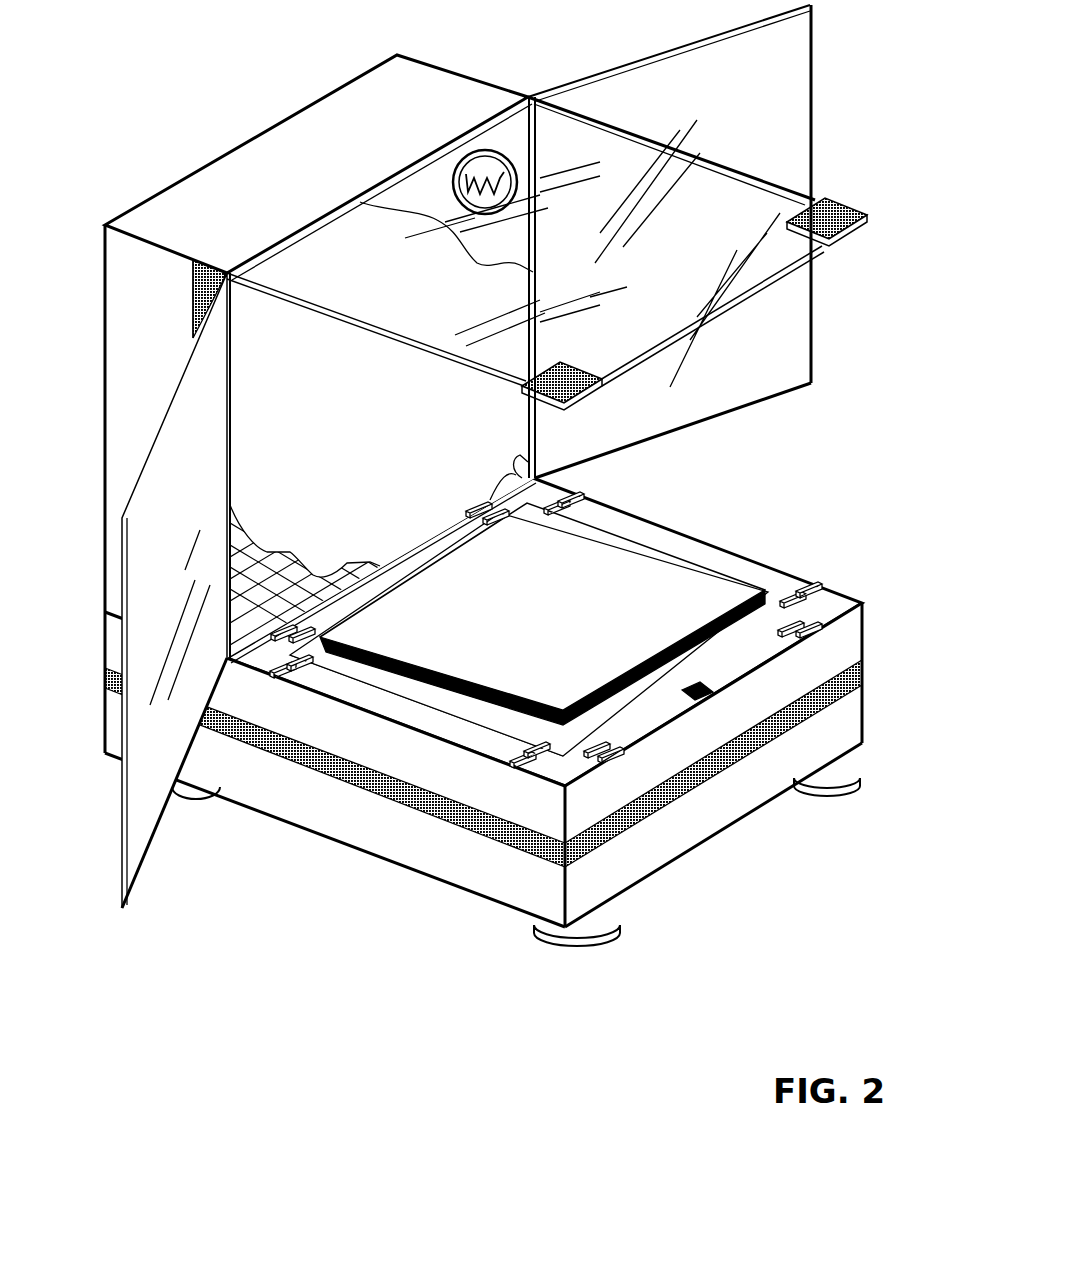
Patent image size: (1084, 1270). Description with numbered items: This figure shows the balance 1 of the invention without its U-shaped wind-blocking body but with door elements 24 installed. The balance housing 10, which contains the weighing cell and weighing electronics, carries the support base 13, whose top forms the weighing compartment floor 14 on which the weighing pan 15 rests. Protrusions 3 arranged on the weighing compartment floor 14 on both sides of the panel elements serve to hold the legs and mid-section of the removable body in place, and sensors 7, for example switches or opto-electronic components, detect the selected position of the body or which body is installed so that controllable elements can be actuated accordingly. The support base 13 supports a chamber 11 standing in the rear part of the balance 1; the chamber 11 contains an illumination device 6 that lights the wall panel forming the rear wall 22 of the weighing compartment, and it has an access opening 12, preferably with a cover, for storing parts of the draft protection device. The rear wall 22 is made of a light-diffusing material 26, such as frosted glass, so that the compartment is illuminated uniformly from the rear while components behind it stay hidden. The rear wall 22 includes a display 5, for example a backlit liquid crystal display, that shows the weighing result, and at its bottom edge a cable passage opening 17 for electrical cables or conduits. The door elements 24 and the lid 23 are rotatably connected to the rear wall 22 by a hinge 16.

The balance 1 is at (400, 908).
The protrusions 3 is at (546, 622).
The display 5 is at (367, 420).
The illumination device 6 is at (490, 152).
The sensors 7 is at (692, 683).
The balance housing 10 is at (222, 106).
The chamber 11 is at (210, 193).
The access opening 12 is at (193, 285).
The support base 13 is at (340, 742).
The weighing compartment floor 14 is at (440, 717).
The weighing pan 15 is at (490, 732).
The hinge 16 is at (281, 240).
The cable passage opening 17 is at (538, 463).
The rear wall 22 is at (432, 490).
The lid 23 is at (613, 160).
The door elements 24 is at (757, 108).
The light-diffusing material 26 is at (317, 560).